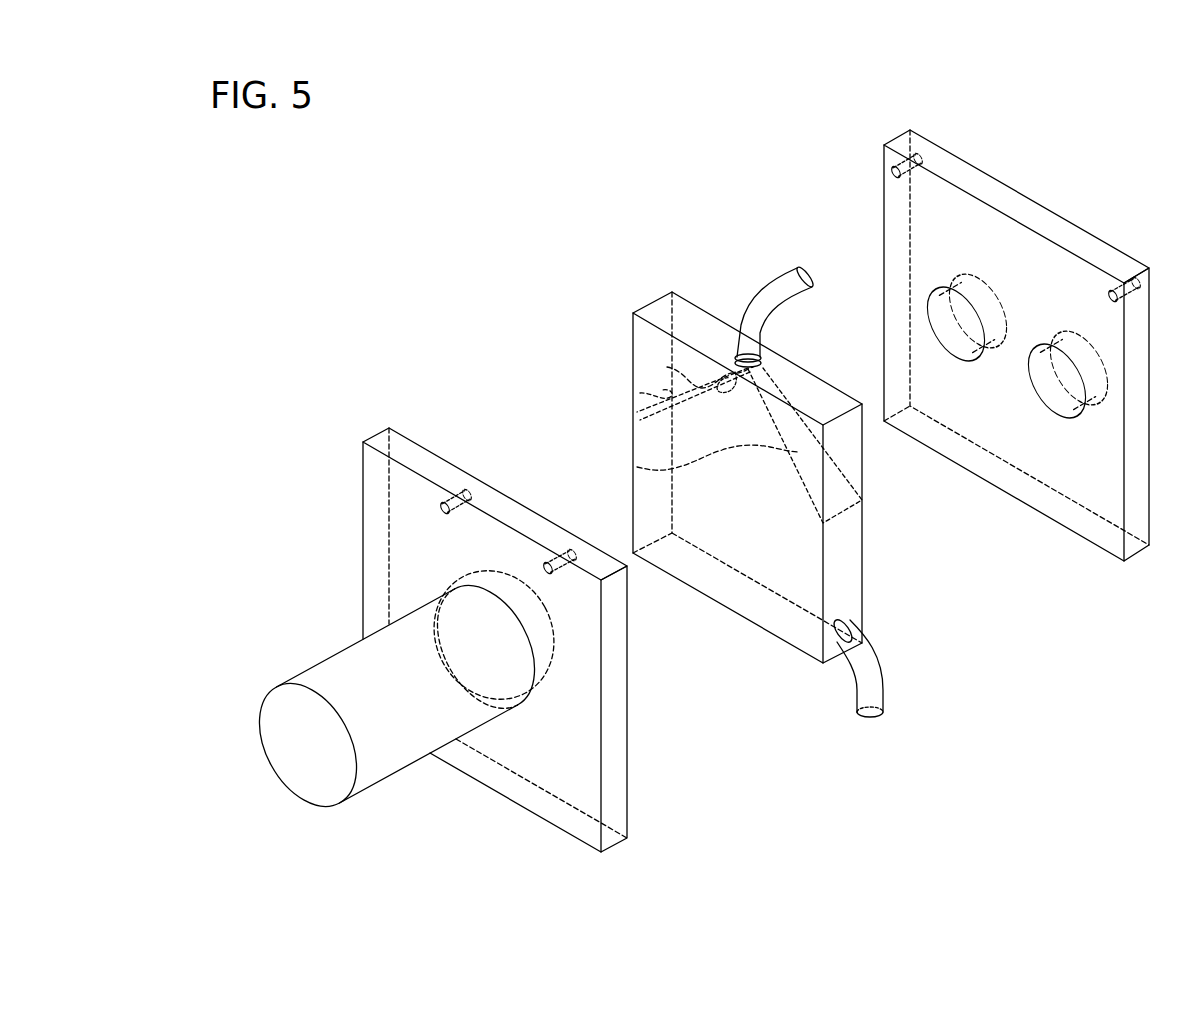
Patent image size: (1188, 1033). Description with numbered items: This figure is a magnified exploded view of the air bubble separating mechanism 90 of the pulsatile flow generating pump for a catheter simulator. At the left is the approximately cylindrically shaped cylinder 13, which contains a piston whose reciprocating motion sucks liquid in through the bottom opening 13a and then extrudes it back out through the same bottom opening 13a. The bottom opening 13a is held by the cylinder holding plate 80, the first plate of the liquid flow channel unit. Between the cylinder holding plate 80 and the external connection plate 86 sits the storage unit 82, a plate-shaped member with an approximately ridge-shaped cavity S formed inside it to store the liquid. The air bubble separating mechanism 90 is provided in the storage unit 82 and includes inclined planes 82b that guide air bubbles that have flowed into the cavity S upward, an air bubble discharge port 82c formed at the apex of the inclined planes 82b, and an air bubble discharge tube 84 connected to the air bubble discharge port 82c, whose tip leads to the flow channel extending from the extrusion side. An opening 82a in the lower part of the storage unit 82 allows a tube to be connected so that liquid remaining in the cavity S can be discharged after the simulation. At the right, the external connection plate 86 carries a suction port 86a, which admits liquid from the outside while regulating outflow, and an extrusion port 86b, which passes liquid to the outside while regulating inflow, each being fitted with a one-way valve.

The air bubble separating mechanism 90 is at (648, 218).
The cylinder holding plate 80 is at (375, 480).
The cylinder 13 is at (292, 750).
The bottom opening 13a is at (458, 590).
The storage unit 82 is at (647, 337).
The opening 82a is at (863, 608).
The inclined planes 82b is at (640, 393).
The air bubble discharge port 82c is at (667, 367).
The air bubble discharge tube 84 is at (775, 292).
The external connection plate 86 is at (900, 134).
The suction port 86a is at (939, 310).
The extrusion port 86b is at (1048, 363).
The cavity S is at (743, 548).